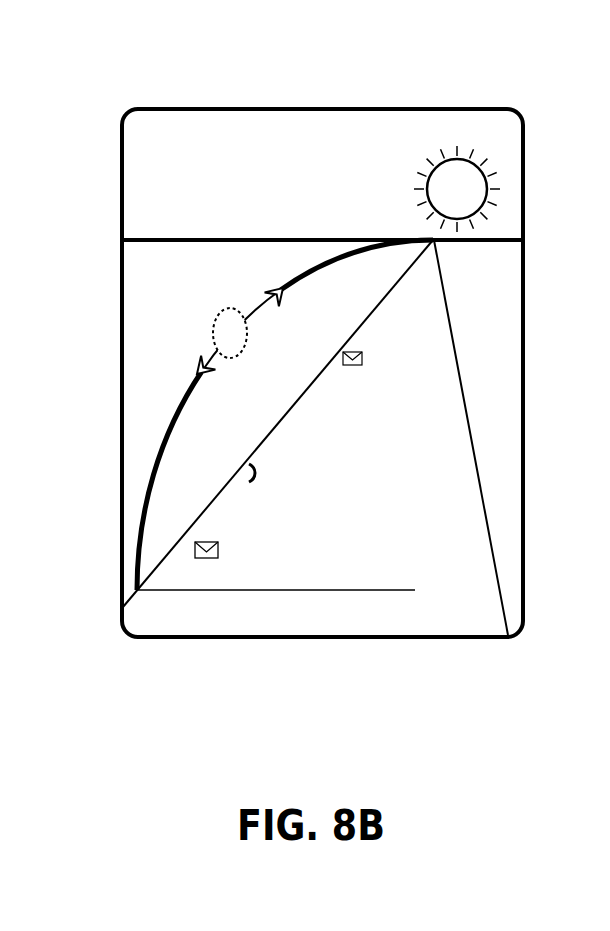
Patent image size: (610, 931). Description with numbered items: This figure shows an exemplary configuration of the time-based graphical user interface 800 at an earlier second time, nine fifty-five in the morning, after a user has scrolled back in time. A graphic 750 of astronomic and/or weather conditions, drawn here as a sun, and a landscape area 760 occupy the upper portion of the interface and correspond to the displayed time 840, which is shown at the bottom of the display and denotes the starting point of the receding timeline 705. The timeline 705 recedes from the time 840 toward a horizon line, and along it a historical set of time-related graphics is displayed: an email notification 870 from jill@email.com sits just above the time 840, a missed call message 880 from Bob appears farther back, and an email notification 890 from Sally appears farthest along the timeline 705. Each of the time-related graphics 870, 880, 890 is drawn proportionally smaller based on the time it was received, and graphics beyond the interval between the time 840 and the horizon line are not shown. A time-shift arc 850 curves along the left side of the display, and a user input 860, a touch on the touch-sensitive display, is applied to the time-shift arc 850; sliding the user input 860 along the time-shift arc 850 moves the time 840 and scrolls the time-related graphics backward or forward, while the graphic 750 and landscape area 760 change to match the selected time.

The graphical user interface 800 is at (157, 38).
The graphic 750 is at (156, 137).
The landscape area 760 is at (156, 276).
The time-shift arc 850 is at (173, 397).
The user input 860 is at (208, 324).
The timeline 705 is at (445, 278).
The email notification 890 is at (462, 355).
The missed call message 880 is at (483, 472).
The time-related graphic 870 is at (465, 550).
The time 840 is at (450, 602).